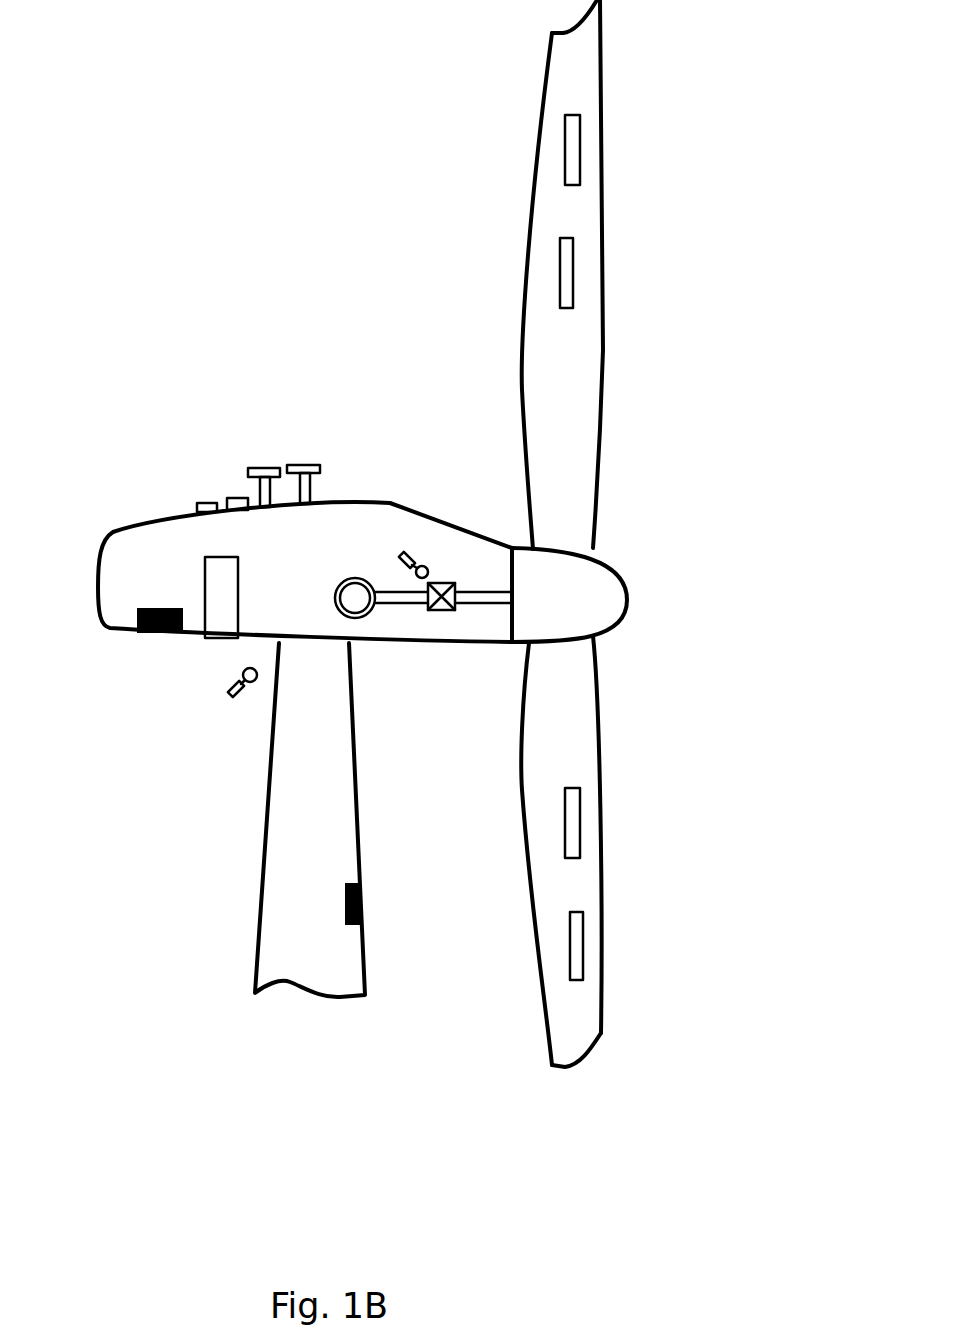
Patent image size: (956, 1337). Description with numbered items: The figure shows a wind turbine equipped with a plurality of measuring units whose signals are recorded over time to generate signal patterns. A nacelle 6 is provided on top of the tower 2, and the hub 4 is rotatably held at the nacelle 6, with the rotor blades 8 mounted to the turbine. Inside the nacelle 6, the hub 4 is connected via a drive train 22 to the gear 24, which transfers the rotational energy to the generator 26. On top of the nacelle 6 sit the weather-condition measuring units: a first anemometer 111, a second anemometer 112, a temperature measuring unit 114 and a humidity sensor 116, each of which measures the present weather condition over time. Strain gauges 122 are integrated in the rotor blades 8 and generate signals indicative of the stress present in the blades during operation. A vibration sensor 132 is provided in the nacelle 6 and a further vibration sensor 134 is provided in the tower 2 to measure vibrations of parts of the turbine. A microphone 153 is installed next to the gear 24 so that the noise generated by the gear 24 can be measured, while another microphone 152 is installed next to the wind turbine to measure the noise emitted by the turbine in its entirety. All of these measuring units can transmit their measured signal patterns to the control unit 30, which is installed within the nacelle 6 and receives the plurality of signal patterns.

The tower 2 is at (272, 913).
The hub 4 is at (612, 612).
The nacelle 6 is at (118, 563).
The rotor blades 8 is at (603, 342).
The drive train 22 is at (502, 598).
The gear 24 is at (435, 610).
The generator 26 is at (347, 600).
The control unit 30 is at (215, 572).
The first anemometer 111 is at (262, 468).
The second anemometer 112 is at (310, 465).
The temperature measuring unit 114 is at (237, 498).
The humidity sensor 116 is at (198, 507).
The strain gauges 122 is at (573, 153).
The vibration sensor 132 is at (143, 634).
The vibration sensor 134 is at (361, 907).
The microphone 152 is at (225, 702).
The microphone 153 is at (400, 553).